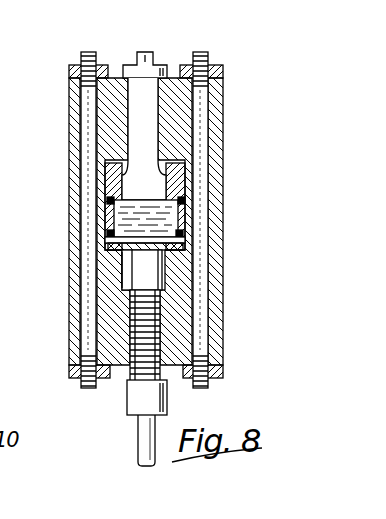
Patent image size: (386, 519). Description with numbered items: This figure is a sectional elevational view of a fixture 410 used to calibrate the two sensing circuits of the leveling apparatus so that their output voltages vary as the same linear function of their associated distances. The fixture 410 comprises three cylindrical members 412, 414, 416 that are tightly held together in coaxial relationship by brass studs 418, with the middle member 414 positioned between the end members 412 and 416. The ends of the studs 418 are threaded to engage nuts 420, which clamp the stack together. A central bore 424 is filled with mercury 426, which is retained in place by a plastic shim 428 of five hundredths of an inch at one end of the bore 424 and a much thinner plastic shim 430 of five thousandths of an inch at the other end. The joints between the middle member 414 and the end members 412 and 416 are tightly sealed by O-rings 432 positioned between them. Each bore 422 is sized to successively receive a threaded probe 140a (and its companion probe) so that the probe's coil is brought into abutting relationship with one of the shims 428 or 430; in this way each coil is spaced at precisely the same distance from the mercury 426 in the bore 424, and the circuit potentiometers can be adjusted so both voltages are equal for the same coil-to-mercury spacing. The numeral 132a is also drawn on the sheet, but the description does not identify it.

The fixture 410 is at (234, 88).
The cylindrical member 412 is at (214, 118).
The cylindrical member 414 is at (100, 201).
The cylindrical member 416 is at (212, 320).
The brass stud 418 is at (92, 50).
The nut 420 is at (206, 66).
The bore 422 is at (147, 178).
The bore 424 is at (170, 201).
The mercury 426 is at (172, 237).
The plastic shim 428 is at (124, 260).
The plastic shim 430 is at (110, 178).
The O-ring 432 is at (108, 234).
The threaded probe 140a is at (160, 262).
The threaded rod 132a is at (158, 304).